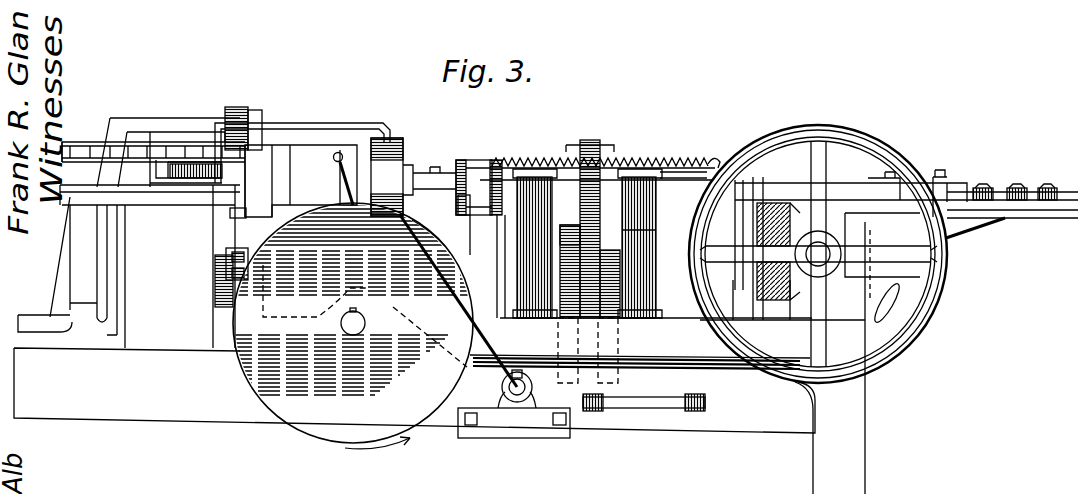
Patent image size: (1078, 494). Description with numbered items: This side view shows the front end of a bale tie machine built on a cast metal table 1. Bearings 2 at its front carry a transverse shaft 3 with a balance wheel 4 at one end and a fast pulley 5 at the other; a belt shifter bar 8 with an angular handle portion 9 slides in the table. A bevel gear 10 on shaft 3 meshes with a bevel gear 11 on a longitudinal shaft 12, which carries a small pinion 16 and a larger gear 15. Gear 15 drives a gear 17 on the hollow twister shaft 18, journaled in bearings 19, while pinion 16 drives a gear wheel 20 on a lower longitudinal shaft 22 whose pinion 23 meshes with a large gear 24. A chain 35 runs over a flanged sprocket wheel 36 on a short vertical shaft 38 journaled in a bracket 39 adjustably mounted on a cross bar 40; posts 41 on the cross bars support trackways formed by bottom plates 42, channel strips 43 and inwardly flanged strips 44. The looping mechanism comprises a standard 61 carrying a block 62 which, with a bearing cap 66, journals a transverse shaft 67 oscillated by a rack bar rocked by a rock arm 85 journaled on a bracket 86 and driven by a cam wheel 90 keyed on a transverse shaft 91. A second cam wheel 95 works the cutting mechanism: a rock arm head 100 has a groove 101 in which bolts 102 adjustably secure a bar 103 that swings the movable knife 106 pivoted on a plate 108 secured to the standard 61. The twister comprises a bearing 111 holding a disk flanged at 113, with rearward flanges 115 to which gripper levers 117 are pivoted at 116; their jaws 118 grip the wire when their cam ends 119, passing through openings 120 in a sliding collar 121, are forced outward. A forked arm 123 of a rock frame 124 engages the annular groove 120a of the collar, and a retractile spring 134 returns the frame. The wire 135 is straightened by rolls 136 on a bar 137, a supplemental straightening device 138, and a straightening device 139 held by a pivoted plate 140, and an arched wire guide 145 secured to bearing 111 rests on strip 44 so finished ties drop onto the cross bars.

The table 1 is at (842, 415).
The bearings 2 is at (787, 312).
The transverse shaft 3 is at (818, 254).
The balance wheel 4 is at (838, 128).
The fast pulley 5 is at (895, 308).
The bar 8 is at (695, 411).
The angular portion 9 is at (635, 408).
The bevel gear 10 is at (818, 190).
The bevel gear 11 is at (768, 205).
The longitudinal shaft 12 is at (620, 255).
The gear 15 is at (620, 235).
The pinion 16 is at (585, 225).
The gear 17 is at (592, 145).
The twister shaft 18 is at (579, 140).
The bearings 19 is at (540, 302).
The gear wheel 20 is at (566, 318).
The longitudinal shaft 22 is at (548, 232).
The pinion 23 is at (600, 316).
The large gear 24 is at (635, 312).
The chain 35 is at (74, 142).
The sprocket wheel 36 is at (200, 150).
The vertical shaft 38 is at (232, 108).
The bracket 39 is at (128, 120).
The cross bar 40 is at (67, 330).
The posts 41 is at (78, 275).
The bottom plates 42 is at (158, 200).
The longitudinal strips 43 is at (70, 205).
The longitudinal strips 44 is at (60, 192).
The standard 61 is at (283, 150).
The block 62 is at (301, 181).
The bearing cap 66 is at (347, 156).
The transverse horizontal shaft 67 is at (336, 152).
The rock arm 85 is at (466, 308).
The bracket 86 is at (512, 438).
The cam wheel 90 is at (335, 436).
The transverse shaft 91 is at (352, 335).
The cam wheel 95 is at (213, 333).
The head 100 is at (232, 250).
The groove 101 is at (232, 262).
The bolts 102 is at (232, 275).
The bar 103 is at (233, 237).
The knife 106 is at (230, 213).
The plate 108 is at (262, 145).
The bearing 111 is at (418, 150).
The flange 113 is at (372, 138).
The flanges 115 is at (412, 160).
The pivot 116 is at (414, 176).
The gripper levers 117 is at (447, 185).
The jaws 118 is at (356, 212).
The cam ends 119 is at (458, 215).
The openings 120 is at (420, 237).
The annular groove 120a is at (512, 160).
The collar 121 is at (489, 241).
The arm 123 is at (498, 158).
The rock frame 124 is at (487, 266).
The retractile spring 134 is at (684, 157).
The wire 135 is at (1000, 192).
The rolls 136 is at (1035, 192).
The bar 137 is at (1005, 218).
The supplemental straightening device 138 is at (955, 182).
The straightening device 139 is at (755, 185).
The pivoted plate 140 is at (683, 186).
The arched wire guide 145 is at (266, 151).